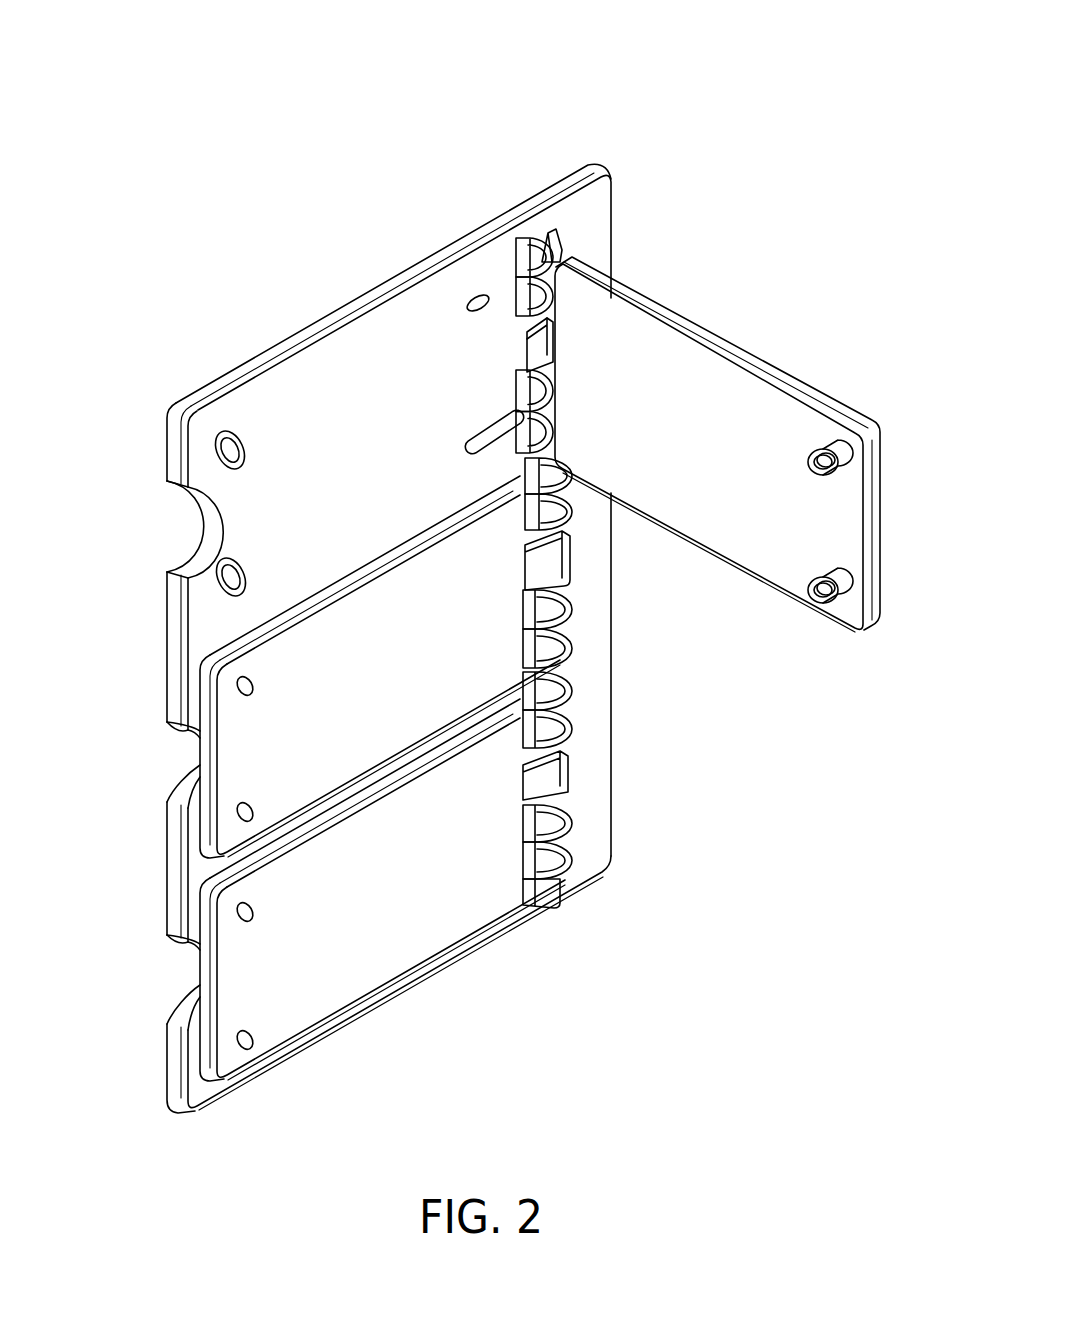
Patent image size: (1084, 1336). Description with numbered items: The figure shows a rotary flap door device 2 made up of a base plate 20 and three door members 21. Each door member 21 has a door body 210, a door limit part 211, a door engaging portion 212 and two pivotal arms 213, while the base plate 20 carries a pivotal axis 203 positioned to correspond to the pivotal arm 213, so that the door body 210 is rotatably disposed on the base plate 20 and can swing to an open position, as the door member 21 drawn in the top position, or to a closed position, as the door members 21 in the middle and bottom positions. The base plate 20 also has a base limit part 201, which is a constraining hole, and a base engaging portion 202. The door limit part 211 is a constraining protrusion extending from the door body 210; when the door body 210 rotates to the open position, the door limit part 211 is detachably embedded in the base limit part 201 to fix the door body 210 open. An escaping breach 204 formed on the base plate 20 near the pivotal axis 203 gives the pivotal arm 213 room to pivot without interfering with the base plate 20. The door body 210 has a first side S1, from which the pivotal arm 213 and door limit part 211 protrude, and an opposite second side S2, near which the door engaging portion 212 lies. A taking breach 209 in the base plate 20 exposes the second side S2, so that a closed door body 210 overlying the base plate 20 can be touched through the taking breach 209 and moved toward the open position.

The rotary flap door device 2 is at (758, 88).
The base plate 20 is at (204, 362).
The door member 21 is at (722, 318).
The base limit part 201 is at (522, 354).
The base engaging portion 202 is at (222, 455).
The pivotal axis 203 is at (537, 240).
The escaping breach 204 is at (486, 292).
The taking breach 209 is at (180, 520).
The door body 210 is at (764, 410).
The door limit part 211 is at (535, 343).
The door engaging portion 212 is at (835, 445).
The pivotal arm 213 is at (548, 256).
The first side S1 is at (558, 350).
The second side S2 is at (878, 538).